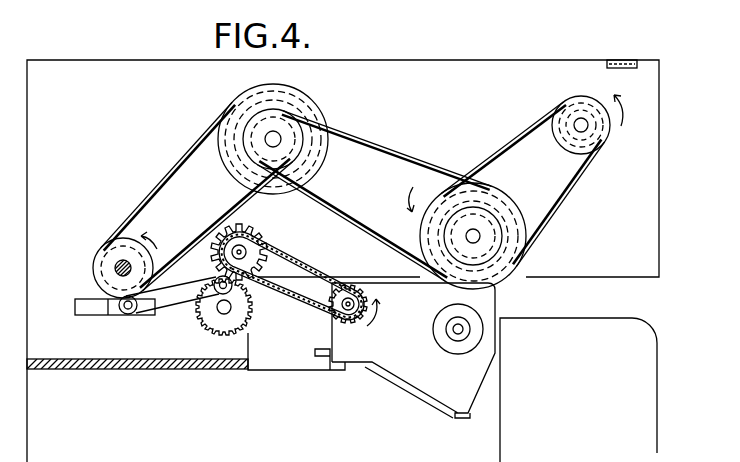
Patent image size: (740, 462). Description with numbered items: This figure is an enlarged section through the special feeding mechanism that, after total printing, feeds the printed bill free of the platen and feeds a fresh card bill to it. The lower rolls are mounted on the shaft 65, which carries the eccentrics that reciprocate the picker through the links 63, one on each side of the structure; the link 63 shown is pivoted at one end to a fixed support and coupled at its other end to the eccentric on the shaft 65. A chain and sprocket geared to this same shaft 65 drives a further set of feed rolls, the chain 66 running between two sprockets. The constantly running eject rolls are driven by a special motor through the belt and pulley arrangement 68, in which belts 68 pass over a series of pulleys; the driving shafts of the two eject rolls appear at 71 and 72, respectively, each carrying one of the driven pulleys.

The picker operating links 63 is at (170, 299).
The shaft 65 is at (223, 309).
The drive chain 66 is at (296, 300).
The belt and pulley arrangement 68 is at (175, 173).
The driving shaft 71 is at (478, 236).
The driving shaft 72 is at (583, 128).